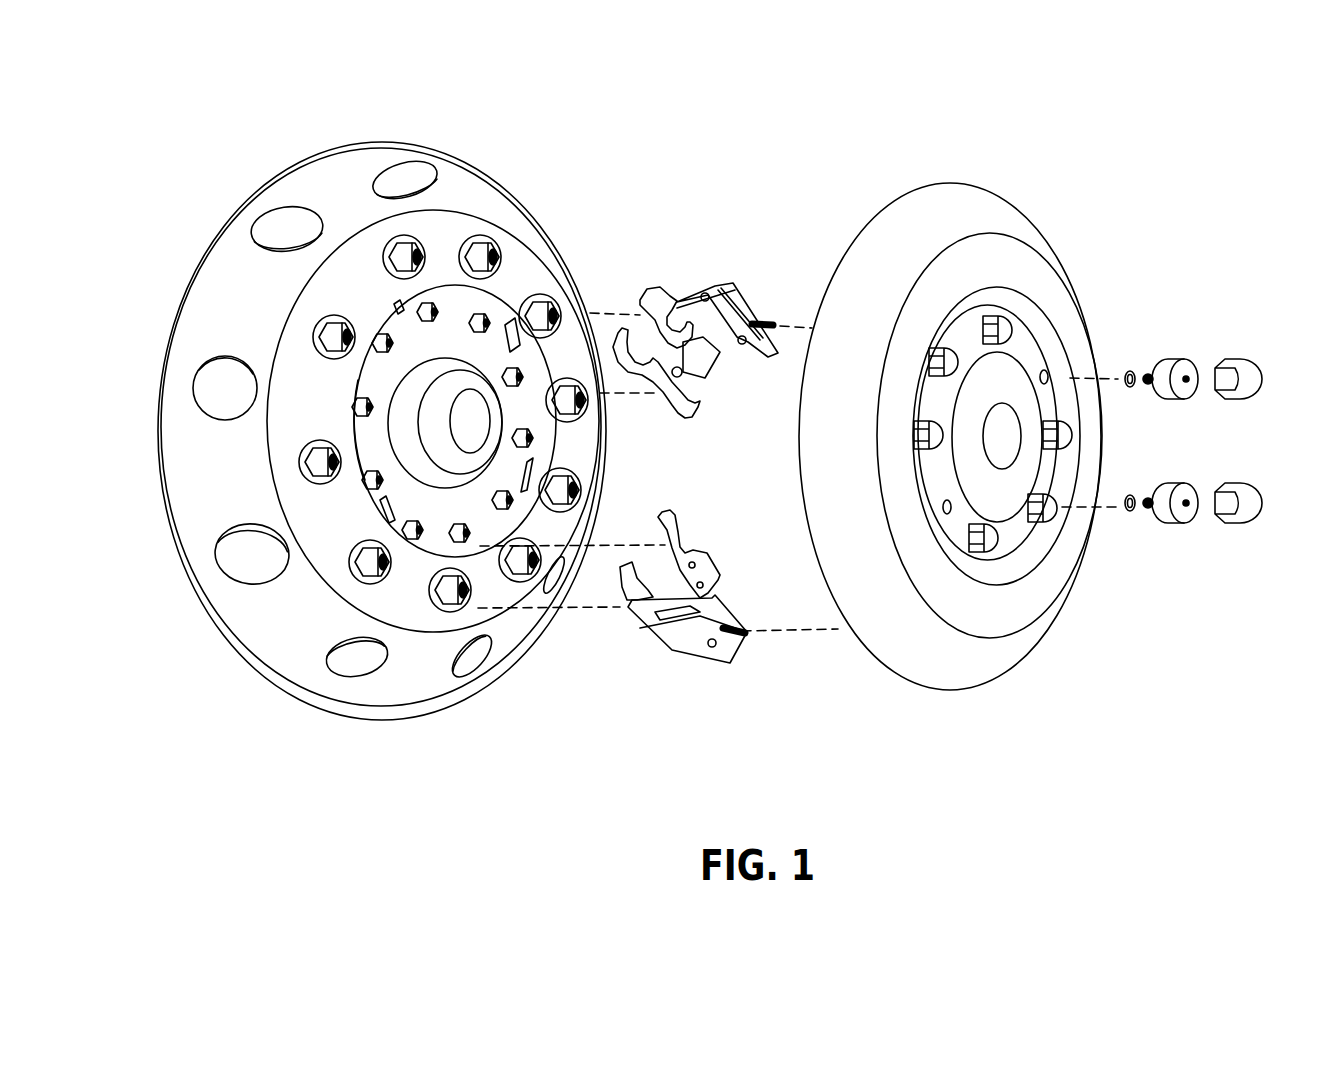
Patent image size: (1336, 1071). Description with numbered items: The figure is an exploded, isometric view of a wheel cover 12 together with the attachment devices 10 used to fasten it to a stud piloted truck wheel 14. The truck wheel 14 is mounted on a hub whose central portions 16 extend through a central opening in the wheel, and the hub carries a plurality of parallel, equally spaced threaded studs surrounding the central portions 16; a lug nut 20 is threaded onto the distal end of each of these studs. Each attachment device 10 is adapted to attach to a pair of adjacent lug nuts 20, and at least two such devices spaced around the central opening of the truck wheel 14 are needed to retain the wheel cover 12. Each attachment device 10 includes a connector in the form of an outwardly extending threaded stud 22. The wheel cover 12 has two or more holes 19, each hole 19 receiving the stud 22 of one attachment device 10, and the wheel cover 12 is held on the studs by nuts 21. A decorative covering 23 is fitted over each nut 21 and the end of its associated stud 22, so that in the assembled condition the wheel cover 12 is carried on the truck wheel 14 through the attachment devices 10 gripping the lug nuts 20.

The attachment device 10 is at (681, 275).
The wheel cover 12 is at (1025, 210).
The truck wheel 14 is at (324, 142).
The central portions 16 is at (450, 458).
The holes 19 is at (1050, 372).
The lug nut 20 is at (314, 338).
The nuts 21 is at (1177, 365).
The threaded stud 22 is at (779, 305).
The decorative covering 23 is at (1250, 368).